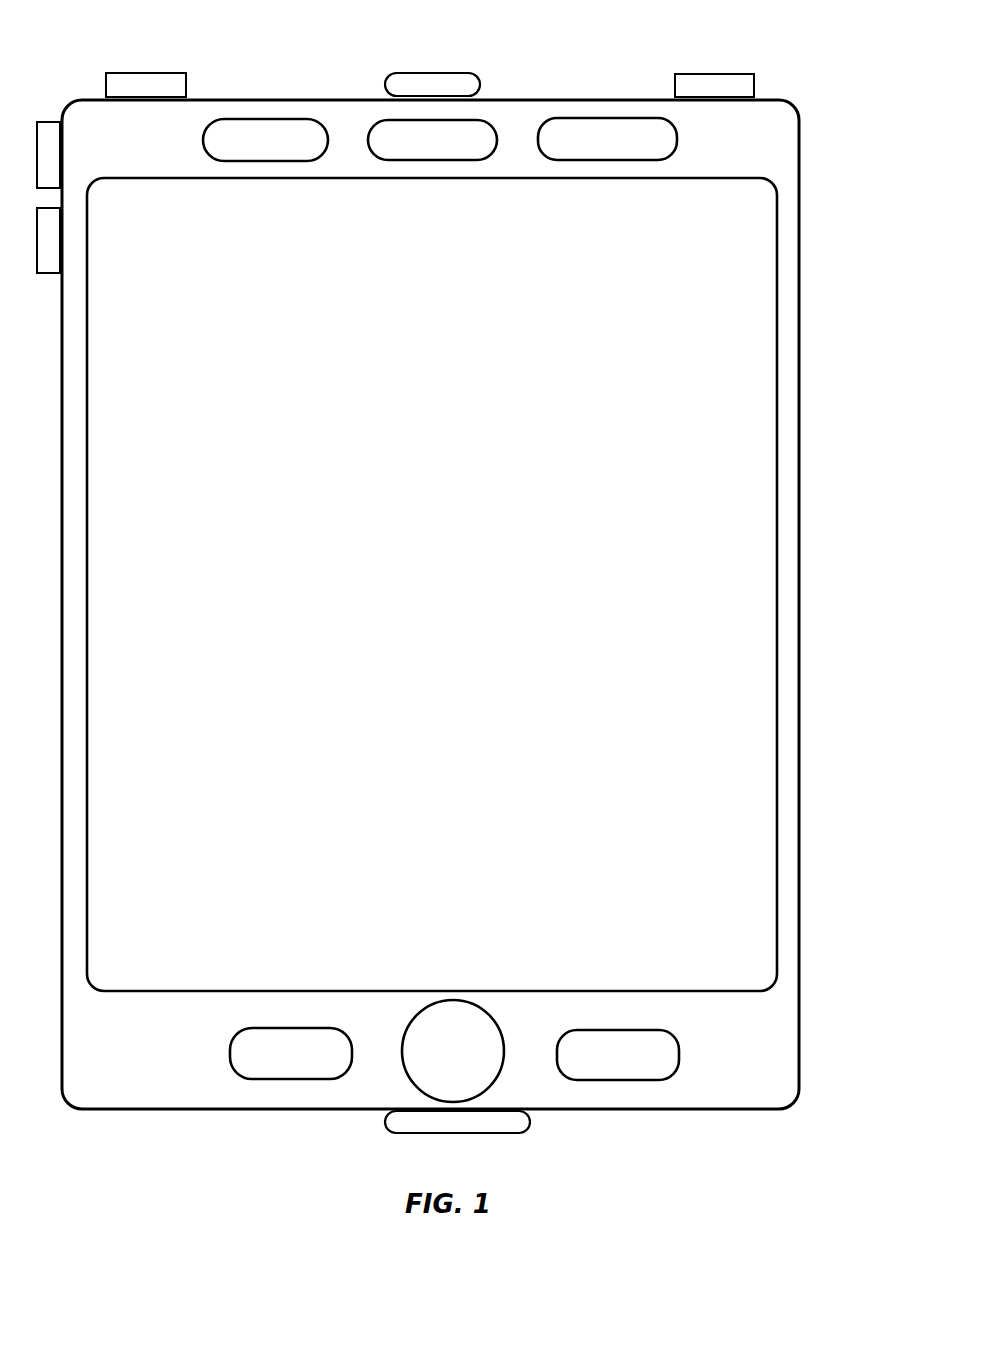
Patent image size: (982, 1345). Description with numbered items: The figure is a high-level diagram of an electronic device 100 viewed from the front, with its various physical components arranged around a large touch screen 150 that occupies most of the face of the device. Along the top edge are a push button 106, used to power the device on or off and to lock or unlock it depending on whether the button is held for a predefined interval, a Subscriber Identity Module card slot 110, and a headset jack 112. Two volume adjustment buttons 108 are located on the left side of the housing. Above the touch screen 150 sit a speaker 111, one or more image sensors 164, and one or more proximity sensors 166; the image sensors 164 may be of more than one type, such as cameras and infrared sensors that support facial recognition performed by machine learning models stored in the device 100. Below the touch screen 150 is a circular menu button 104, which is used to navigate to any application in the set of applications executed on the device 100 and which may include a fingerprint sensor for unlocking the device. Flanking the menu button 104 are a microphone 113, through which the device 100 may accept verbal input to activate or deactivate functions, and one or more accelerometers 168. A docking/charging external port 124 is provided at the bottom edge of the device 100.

The electronic device 100 is at (843, 90).
The menu button 104 is at (453, 1051).
The push button 106 is at (146, 85).
The volume adjustment buttons 108 is at (48, 197).
The Subscriber Identity Module (SIM) card slot 110 is at (432, 84).
The speaker 111 is at (265, 140).
The headset jack 112 is at (714, 85).
The microphone 113 is at (291, 1053).
The docking/charging external port 124 is at (457, 1122).
The touch screen 150 is at (788, 474).
The image sensors 164 is at (432, 140).
The proximity sensors 166 is at (607, 139).
The accelerometers 168 is at (618, 1055).